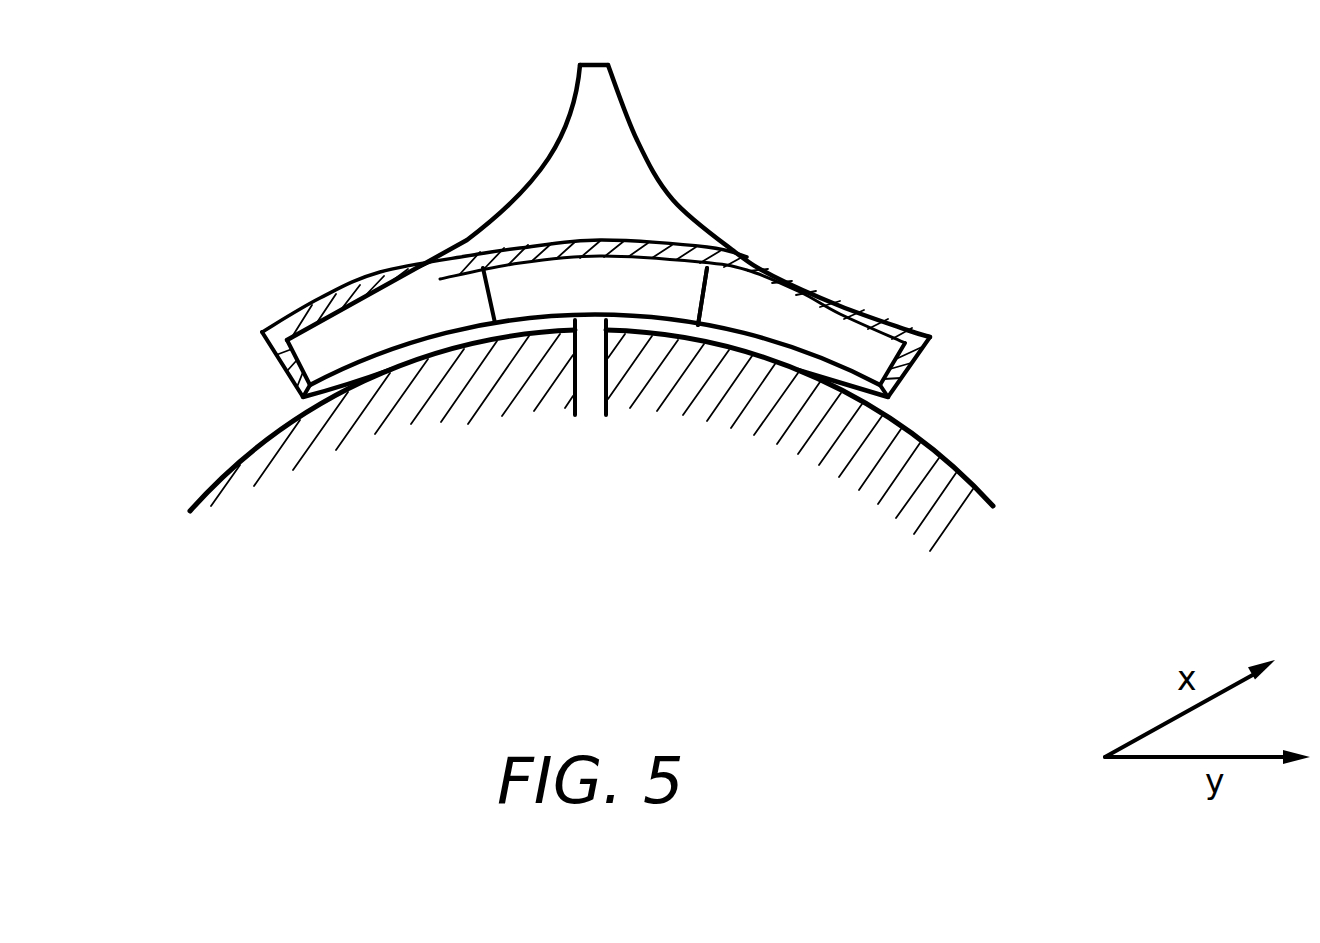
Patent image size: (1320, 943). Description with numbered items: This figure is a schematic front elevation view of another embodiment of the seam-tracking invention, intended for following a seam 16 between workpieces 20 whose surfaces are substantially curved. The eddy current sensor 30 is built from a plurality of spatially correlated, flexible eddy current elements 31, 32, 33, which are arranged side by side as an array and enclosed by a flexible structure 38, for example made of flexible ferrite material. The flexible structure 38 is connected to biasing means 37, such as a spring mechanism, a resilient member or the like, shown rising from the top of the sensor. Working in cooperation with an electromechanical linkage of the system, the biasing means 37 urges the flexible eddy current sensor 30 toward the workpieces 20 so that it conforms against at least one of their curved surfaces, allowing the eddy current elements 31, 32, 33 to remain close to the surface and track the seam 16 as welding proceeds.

The seam 16 is at (592, 407).
The workpieces 20 is at (591, 440).
The eddy current sensor 30 is at (885, 242).
The eddy current element 31 is at (334, 332).
The eddy current element 32 is at (516, 283).
The eddy current element 33 is at (780, 307).
The biasing means 37 is at (590, 88).
The flexible structure 38 is at (920, 322).